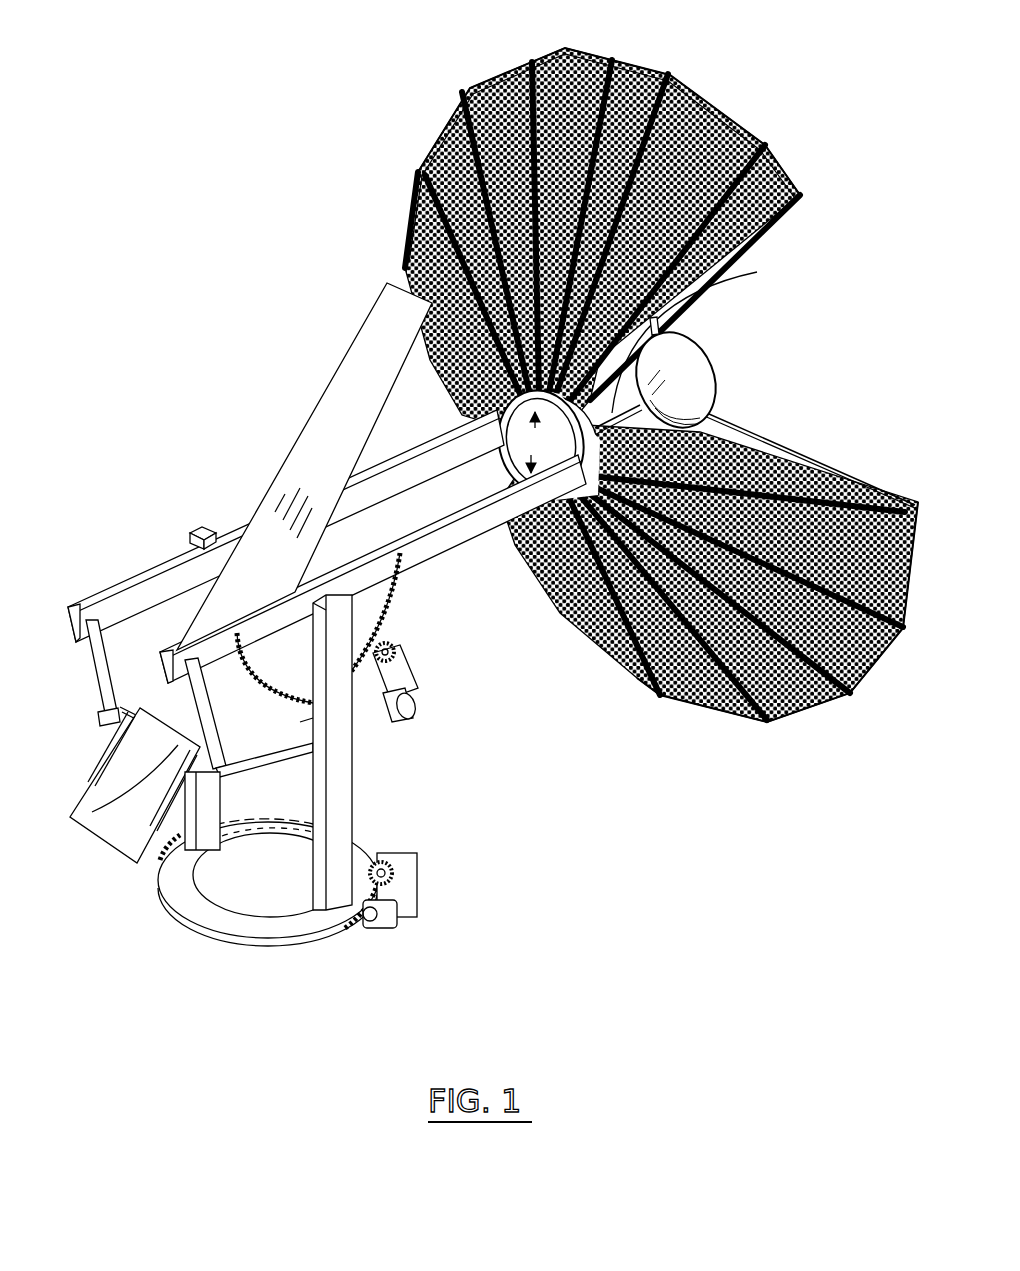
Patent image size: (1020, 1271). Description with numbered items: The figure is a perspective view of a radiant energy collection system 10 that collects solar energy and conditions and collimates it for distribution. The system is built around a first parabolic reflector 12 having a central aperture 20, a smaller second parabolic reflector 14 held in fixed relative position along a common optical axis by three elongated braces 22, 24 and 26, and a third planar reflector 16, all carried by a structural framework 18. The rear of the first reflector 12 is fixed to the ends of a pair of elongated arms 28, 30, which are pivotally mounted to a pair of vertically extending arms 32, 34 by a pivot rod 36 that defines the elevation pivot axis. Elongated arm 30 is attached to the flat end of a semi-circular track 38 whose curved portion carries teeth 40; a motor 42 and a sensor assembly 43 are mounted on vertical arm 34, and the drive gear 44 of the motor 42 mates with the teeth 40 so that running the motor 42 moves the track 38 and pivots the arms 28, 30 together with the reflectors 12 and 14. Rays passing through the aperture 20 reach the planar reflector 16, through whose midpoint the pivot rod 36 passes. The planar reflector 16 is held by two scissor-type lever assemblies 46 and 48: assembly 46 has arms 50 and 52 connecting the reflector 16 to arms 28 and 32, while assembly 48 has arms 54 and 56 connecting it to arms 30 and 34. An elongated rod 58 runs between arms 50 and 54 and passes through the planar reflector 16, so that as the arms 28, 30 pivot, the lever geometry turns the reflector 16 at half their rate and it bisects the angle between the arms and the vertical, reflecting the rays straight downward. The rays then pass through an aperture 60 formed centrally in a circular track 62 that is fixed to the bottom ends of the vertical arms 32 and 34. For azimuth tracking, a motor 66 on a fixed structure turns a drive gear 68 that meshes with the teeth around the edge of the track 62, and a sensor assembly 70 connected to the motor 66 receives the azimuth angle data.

The radiant energy collection system 10 is at (603, 707).
The first parabolic reflector 12 is at (668, 76).
The second parabolic reflector 14 is at (708, 368).
The third planar reflector 16 is at (400, 294).
The structural framework 18 is at (375, 748).
The aperture 20 is at (540, 508).
The elongated brace 22 is at (802, 426).
The elongated brace 24 is at (757, 272).
The elongated brace 26 is at (660, 326).
The elongated arm 28 is at (400, 427).
The elongated arm 30 is at (468, 514).
The vertically extending arm 32 is at (210, 808).
The vertically extending arm 34 is at (347, 814).
The pivot rod 36 is at (206, 530).
The semi-circular track 38 is at (383, 613).
The teeth 40 is at (397, 570).
The motor 42 is at (393, 650).
The sensor assembly 43 is at (410, 712).
The drive gear 44 is at (403, 672).
The scissor-type lever assembly 46 is at (97, 723).
The scissor-type lever assembly 48 is at (292, 780).
The elongated arm 50 is at (93, 661).
The elongated arm 52 is at (120, 705).
The elongated arm 54 is at (205, 692).
The elongated arm 56 is at (313, 745).
The elongated rod 58 is at (117, 834).
The aperture 60 is at (287, 888).
The circular track 62 is at (228, 928).
The motor 66 is at (415, 872).
The drive gear 68 is at (396, 900).
The sensor assembly 70 is at (393, 920).